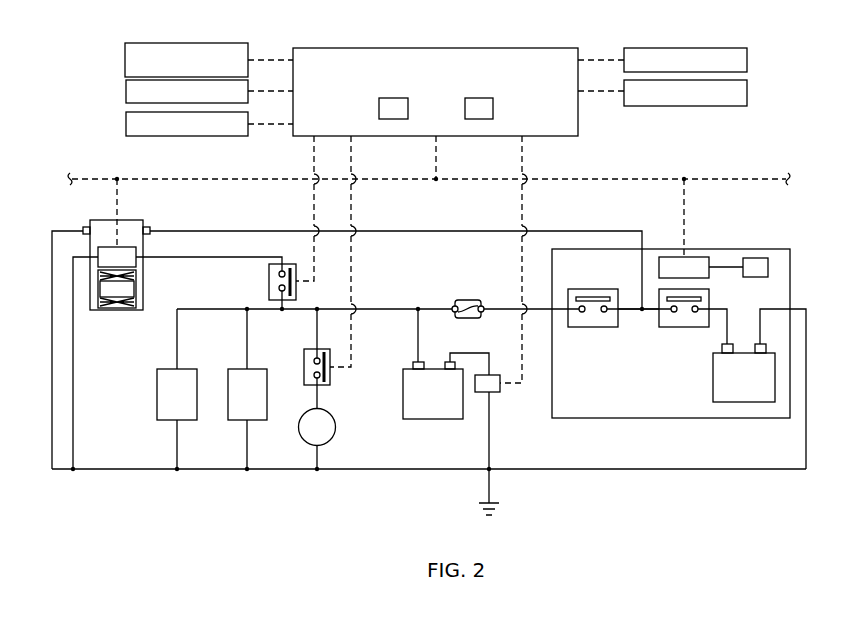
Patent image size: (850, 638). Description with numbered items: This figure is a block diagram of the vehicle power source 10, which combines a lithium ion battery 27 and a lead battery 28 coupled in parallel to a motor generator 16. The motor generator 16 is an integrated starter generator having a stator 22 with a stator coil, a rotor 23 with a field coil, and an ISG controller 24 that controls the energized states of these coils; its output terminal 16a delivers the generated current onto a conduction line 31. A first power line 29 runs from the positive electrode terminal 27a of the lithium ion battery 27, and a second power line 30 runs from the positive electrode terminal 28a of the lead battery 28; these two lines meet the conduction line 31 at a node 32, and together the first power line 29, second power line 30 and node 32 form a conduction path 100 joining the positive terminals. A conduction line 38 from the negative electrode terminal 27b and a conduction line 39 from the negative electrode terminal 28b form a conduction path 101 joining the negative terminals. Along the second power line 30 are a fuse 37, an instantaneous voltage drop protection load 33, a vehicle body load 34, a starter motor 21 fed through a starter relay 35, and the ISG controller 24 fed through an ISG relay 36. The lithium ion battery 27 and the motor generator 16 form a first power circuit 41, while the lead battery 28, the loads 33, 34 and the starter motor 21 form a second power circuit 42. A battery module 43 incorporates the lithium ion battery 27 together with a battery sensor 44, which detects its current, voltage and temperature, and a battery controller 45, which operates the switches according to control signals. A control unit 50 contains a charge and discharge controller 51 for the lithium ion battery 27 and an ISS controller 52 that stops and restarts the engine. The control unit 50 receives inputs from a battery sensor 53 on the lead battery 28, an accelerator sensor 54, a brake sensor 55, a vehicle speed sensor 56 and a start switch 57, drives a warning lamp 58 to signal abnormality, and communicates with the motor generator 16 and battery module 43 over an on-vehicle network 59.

The vehicle power source 10 is at (104, 25).
The motor generator 16 is at (84, 221).
The output terminal 16a is at (148, 226).
The starter motor 21 is at (336, 428).
The stator 22 is at (117, 309).
The rotor 23 is at (128, 289).
The ISG controller 24 is at (137, 261).
The lithium ion battery 27 is at (712, 390).
The positive electrode terminal 27a is at (727, 355).
The negative electrode terminal 27b is at (756, 343).
The lead battery 28 is at (436, 420).
The positive electrode terminal 28a is at (413, 363).
The negative electrode terminal 28b is at (451, 371).
The first power line 29 is at (652, 312).
The second power line 30 is at (378, 308).
The conduction line 31 is at (381, 230).
The node 32 is at (640, 312).
The instantaneous voltage drop protection load 33 is at (186, 368).
The vehicle body load 34 is at (258, 368).
The starter relay 35 is at (330, 380).
The ISG relay 36 is at (268, 278).
The fuse 37 is at (469, 298).
The conduction line 38 is at (773, 309).
The conduction line 39 is at (453, 361).
The first power circuit 41 is at (812, 293).
The second power circuit 42 is at (142, 378).
The battery module 43 is at (788, 247).
The battery sensor 44 is at (757, 257).
The battery controller 45 is at (700, 256).
The control unit 50 is at (549, 47).
The charge and discharge controller 51 is at (379, 108).
The ISS controller 52 is at (493, 108).
The battery sensor 53 is at (498, 396).
The accelerator sensor 54 is at (125, 56).
The brake sensor 55 is at (126, 88).
The vehicle speed sensor 56 is at (126, 121).
The start switch 57 is at (747, 57).
The warning lamp 58 is at (747, 90).
The on-vehicle network 59 is at (592, 177).
The conduction path 100 is at (514, 303).
The conduction path 101 is at (738, 475).